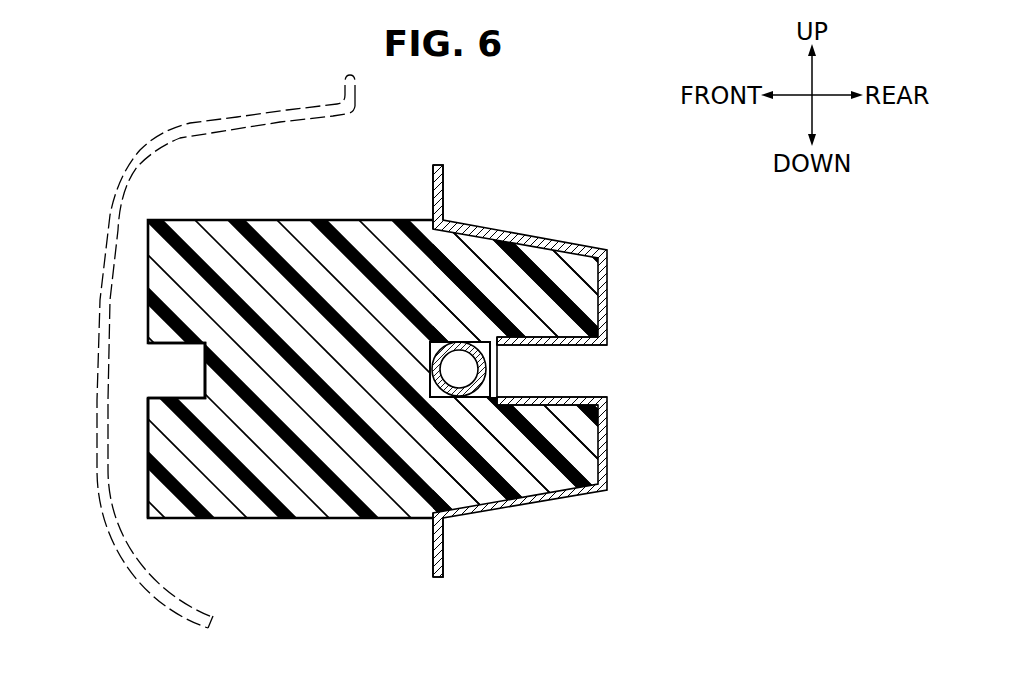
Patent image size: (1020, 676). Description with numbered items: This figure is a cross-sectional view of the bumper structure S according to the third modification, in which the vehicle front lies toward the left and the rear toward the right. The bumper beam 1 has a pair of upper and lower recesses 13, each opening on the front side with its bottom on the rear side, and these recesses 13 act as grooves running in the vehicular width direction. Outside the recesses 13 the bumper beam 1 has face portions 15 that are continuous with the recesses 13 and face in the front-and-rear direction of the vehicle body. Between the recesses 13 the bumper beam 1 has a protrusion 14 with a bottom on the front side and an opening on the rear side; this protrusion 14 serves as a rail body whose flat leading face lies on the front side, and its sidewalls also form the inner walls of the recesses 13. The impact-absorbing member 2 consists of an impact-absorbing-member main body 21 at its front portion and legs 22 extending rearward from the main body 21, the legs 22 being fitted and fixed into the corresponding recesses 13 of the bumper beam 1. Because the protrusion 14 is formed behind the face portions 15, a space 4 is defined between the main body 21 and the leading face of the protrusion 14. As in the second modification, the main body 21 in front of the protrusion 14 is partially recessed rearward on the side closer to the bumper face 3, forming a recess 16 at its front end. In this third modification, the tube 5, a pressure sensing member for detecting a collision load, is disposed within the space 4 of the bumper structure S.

The bumper beam 1 is at (518, 234).
The impact-absorbing member 2 is at (148, 432).
The bumper face 3 is at (288, 110).
The space 4 is at (430, 347).
The tube 5 is at (493, 348).
The recesses 13 is at (537, 342).
The protrusion 14 is at (503, 372).
The face portions 15 is at (433, 193).
The recess 16 is at (173, 375).
The impact-absorbing-member main body 21 is at (288, 224).
The legs 22 is at (568, 298).
The bumper structure S is at (594, 128).